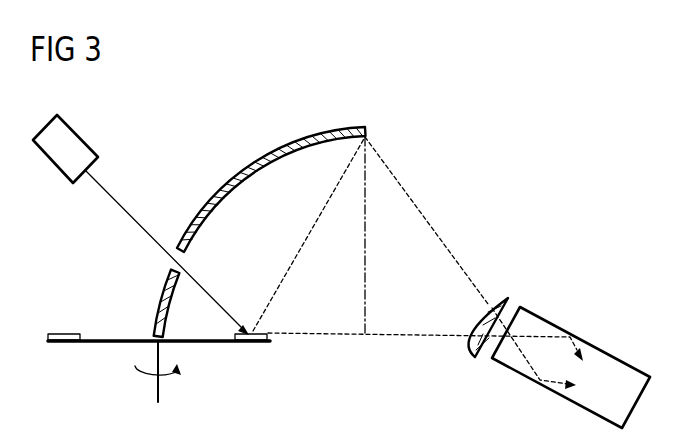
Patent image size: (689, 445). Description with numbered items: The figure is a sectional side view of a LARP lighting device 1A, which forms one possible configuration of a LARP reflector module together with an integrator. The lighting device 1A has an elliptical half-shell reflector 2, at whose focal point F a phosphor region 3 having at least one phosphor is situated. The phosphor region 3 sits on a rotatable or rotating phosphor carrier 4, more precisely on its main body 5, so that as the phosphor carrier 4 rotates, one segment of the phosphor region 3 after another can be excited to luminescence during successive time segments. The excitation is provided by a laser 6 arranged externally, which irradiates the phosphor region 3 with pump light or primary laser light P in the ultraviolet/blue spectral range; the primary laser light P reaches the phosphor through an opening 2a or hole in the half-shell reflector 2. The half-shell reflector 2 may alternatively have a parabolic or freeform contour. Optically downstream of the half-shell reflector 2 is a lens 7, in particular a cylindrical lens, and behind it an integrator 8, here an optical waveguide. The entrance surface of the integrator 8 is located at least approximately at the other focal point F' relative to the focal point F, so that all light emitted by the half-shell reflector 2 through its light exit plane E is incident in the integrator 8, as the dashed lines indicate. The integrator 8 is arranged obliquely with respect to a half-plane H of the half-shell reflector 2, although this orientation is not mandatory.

The lighting device 1A is at (486, 163).
The half-shell reflector 2 is at (298, 143).
The opening 2a is at (173, 262).
The phosphor region 3 is at (63, 334).
The phosphor carrier 4 is at (108, 365).
The main body 5 is at (217, 343).
The laser 6 is at (80, 137).
The lens 7 is at (500, 298).
The integrator 8 is at (612, 355).
The primary laser light P is at (122, 202).
The light exit plane E is at (367, 168).
The focal point F is at (250, 283).
The other focal point F' is at (500, 380).
The half-plane H is at (399, 334).